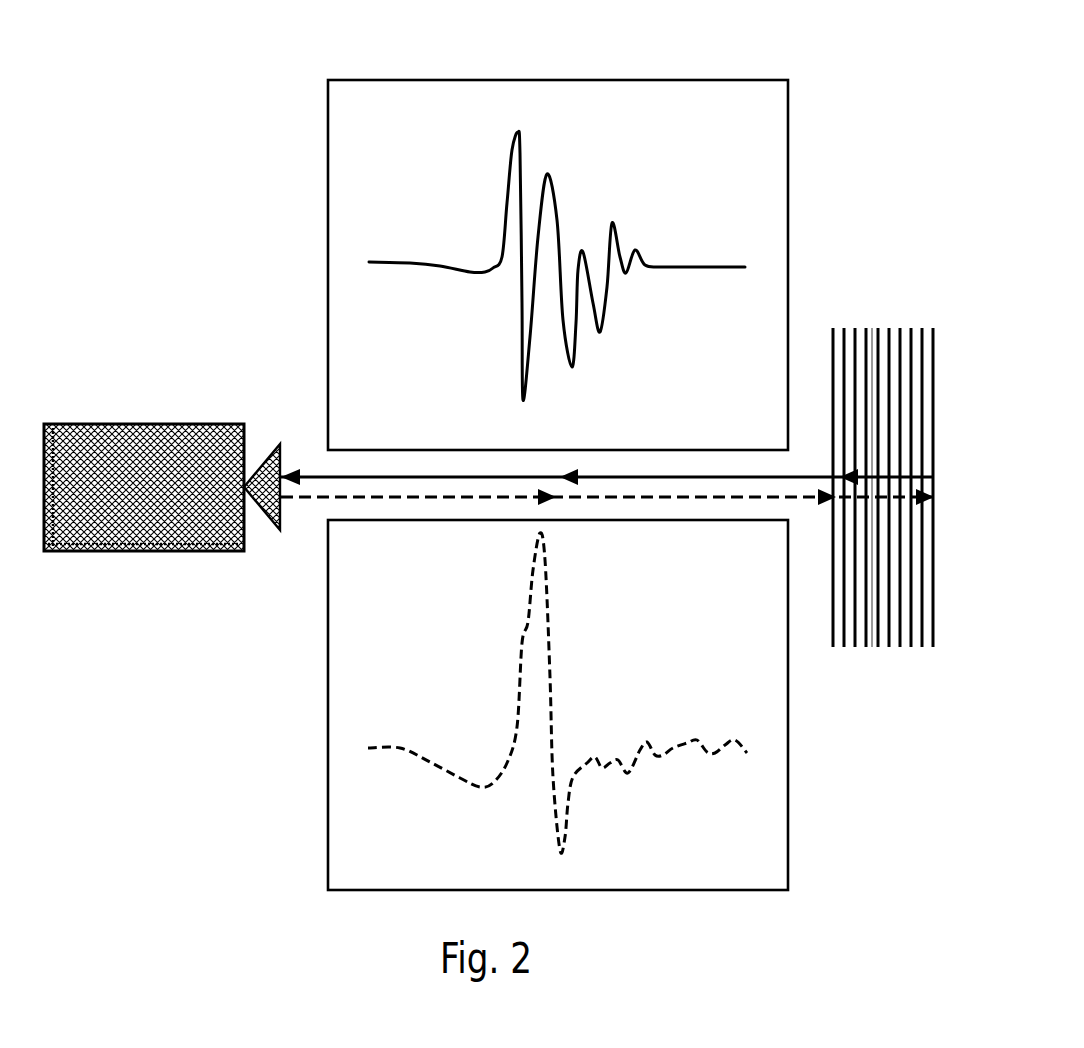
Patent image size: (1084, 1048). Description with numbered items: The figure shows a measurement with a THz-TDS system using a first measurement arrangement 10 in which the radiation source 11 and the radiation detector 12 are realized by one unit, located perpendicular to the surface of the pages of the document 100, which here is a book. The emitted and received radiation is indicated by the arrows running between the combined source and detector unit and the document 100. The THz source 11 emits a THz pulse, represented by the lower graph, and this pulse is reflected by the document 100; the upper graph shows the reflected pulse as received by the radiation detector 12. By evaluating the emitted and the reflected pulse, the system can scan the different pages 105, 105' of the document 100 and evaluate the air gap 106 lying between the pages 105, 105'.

The first measurement arrangement 10 is at (195, 92).
The radiation source 11 is at (162, 532).
The radiation detector 12 is at (138, 553).
The document 100 is at (890, 475).
The page 105 is at (841, 445).
The page 105' is at (921, 451).
The air gap 106 is at (872, 330).